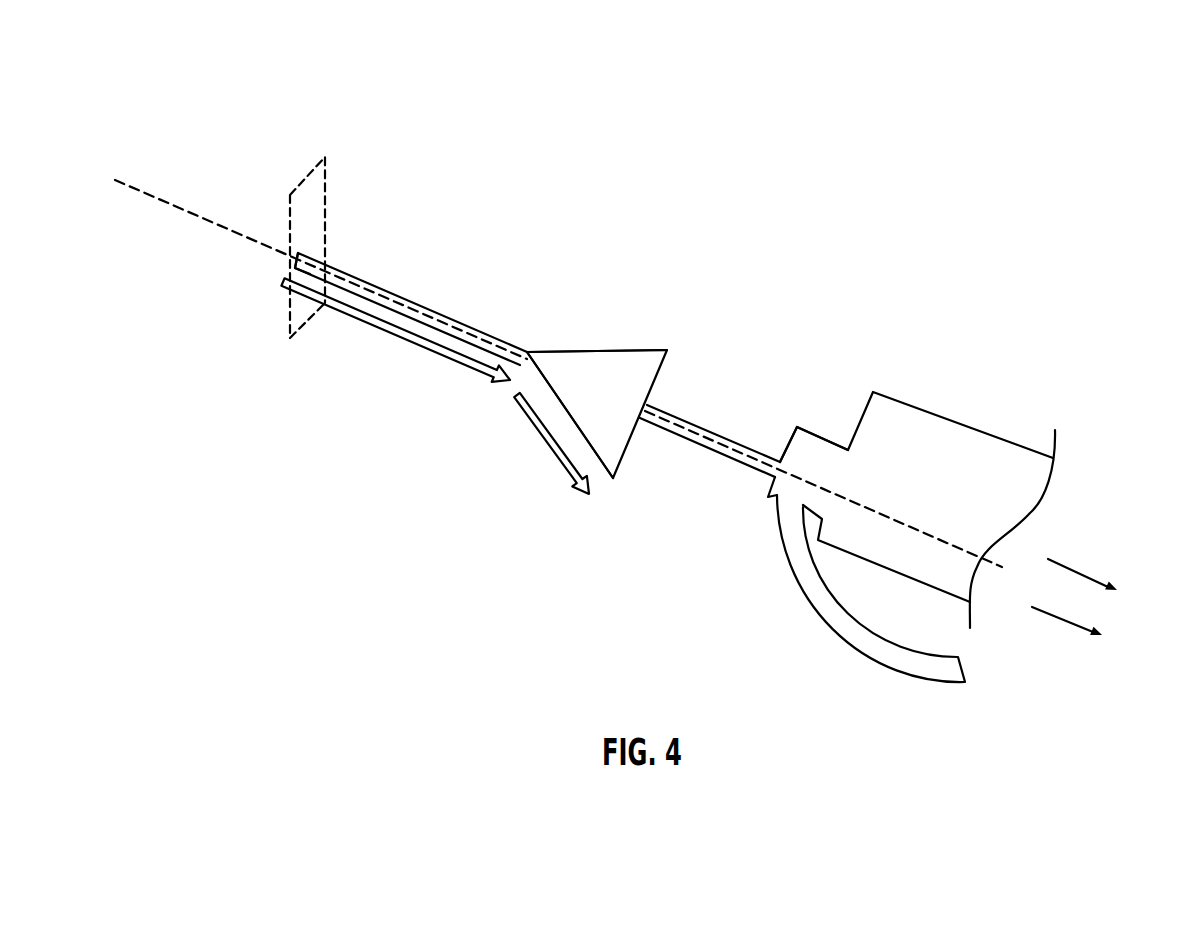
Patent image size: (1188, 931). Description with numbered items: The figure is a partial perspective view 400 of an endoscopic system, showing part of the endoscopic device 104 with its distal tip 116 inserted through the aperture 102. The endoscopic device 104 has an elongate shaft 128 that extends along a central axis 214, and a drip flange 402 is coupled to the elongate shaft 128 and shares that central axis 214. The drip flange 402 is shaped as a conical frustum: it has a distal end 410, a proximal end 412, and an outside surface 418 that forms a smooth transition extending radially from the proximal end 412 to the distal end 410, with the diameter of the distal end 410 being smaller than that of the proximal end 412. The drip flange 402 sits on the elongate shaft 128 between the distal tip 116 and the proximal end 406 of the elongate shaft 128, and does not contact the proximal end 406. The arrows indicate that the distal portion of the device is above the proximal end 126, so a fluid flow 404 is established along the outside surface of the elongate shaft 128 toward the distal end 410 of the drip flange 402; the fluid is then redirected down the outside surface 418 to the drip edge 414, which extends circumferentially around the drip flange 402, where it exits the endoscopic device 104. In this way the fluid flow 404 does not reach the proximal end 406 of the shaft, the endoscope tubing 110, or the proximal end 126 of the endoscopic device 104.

The partial perspective view 400 is at (216, 93).
The central axis 214 is at (154, 198).
The aperture 102 is at (290, 218).
The distal tip 116 is at (302, 255).
The elongate shaft 128 is at (418, 304).
The fluid flow 404 is at (502, 395).
The distal end of drip flange 410 is at (535, 333).
The drip flange 402 is at (562, 302).
The outside surface 418 is at (608, 367).
The drip edge 414 is at (613, 483).
The proximal end of drip flange 412 is at (675, 375).
The endoscopic device 104 is at (752, 255).
The proximal end of elongate shaft 406 is at (778, 433).
The endoscope tubing 110 is at (807, 603).
The proximal end of endoscopic device 126 is at (1083, 599).